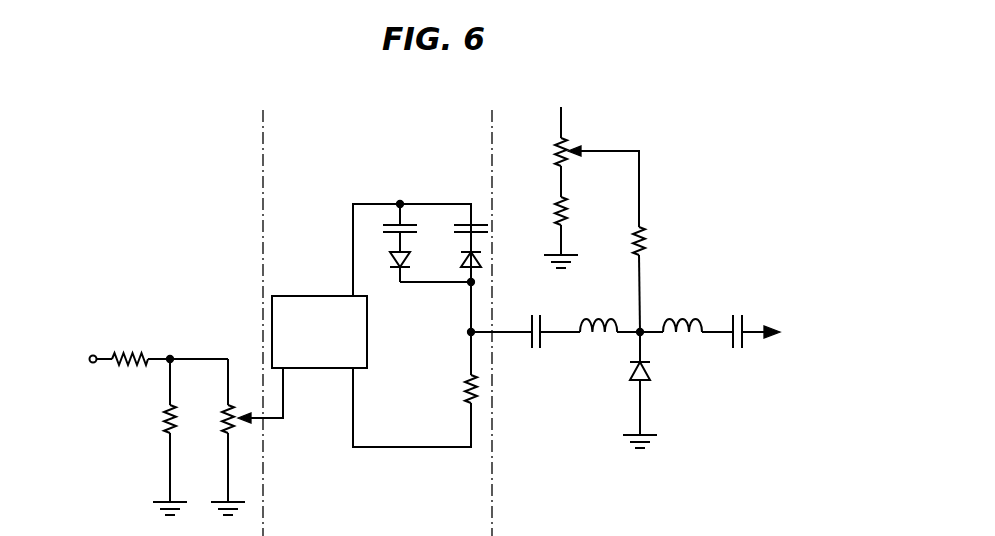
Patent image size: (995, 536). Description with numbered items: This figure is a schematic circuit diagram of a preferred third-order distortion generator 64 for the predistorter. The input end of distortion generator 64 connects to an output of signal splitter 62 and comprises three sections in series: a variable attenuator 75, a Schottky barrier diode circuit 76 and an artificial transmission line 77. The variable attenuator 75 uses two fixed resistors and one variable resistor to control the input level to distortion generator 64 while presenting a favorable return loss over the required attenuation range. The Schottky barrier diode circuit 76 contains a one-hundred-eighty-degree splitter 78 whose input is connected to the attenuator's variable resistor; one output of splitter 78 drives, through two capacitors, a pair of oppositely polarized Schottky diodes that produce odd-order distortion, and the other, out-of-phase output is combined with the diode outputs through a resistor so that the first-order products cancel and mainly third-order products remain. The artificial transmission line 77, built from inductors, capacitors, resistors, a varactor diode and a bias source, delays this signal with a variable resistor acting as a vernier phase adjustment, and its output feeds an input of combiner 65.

The third-order distortion generator 64 is at (195, 92).
The variable attenuator 75 is at (132, 186).
The Schottky barrier diode circuit 76 is at (385, 189).
The artificial transmission line 77 is at (757, 196).
The 180-degree splitter 78 is at (306, 296).
The signal splitter 62 is at (52, 394).
The combiner 65 is at (835, 368).